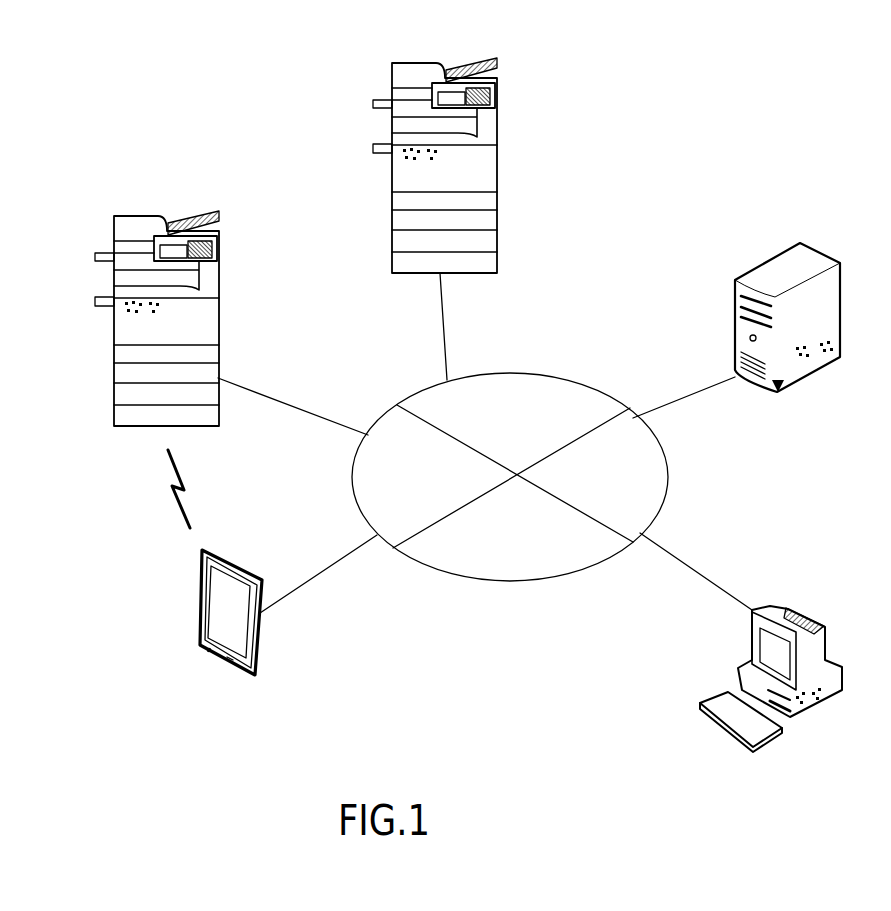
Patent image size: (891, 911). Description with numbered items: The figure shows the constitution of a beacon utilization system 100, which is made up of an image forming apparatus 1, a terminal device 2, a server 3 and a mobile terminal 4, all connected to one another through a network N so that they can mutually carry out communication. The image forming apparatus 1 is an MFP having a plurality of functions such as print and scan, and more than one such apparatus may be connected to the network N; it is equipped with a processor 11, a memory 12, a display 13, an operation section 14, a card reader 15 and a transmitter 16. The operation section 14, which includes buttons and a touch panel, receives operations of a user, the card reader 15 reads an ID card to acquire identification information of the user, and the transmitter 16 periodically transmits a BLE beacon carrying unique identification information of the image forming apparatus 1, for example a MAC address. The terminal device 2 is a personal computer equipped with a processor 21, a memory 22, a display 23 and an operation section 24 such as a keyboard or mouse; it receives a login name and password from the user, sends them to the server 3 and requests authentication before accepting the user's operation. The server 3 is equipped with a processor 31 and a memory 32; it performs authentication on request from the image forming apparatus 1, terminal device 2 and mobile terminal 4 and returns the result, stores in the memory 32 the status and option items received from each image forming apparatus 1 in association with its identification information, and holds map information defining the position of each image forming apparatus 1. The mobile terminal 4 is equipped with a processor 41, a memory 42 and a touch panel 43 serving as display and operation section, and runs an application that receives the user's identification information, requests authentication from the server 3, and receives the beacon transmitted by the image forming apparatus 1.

The image forming apparatus 1 is at (403, 63).
The processor 11 is at (405, 153).
The memory 12 is at (432, 158).
The display 13 is at (448, 78).
The operation section 14 is at (497, 93).
The card reader 15 is at (388, 100).
The transmitter 16 is at (383, 147).
The terminal device 2 is at (813, 622).
The processor 21 is at (803, 710).
The memory 22 is at (822, 702).
The display 23 is at (768, 643).
The operation section 24 is at (715, 697).
The server 3 is at (765, 263).
The processor 31 is at (800, 358).
The memory 32 is at (832, 360).
The mobile terminal 4 is at (233, 555).
The processor 41 is at (208, 652).
The memory 42 is at (230, 658).
The touch panel 43 is at (238, 603).
The network N is at (555, 377).
The beacon utilization system 100 is at (665, 200).